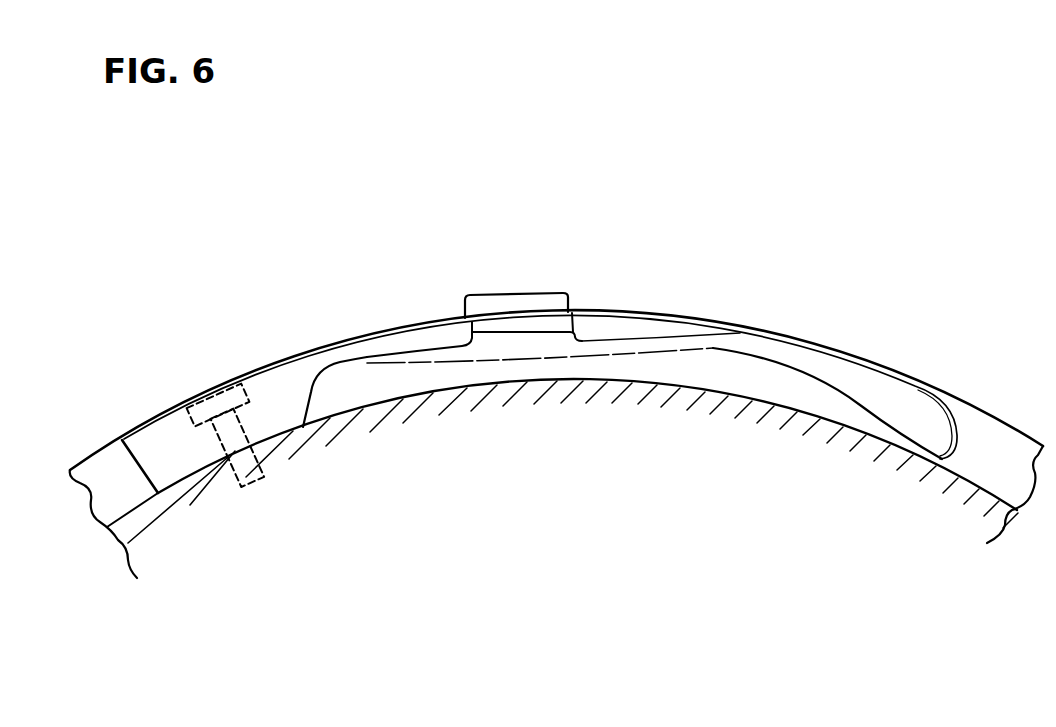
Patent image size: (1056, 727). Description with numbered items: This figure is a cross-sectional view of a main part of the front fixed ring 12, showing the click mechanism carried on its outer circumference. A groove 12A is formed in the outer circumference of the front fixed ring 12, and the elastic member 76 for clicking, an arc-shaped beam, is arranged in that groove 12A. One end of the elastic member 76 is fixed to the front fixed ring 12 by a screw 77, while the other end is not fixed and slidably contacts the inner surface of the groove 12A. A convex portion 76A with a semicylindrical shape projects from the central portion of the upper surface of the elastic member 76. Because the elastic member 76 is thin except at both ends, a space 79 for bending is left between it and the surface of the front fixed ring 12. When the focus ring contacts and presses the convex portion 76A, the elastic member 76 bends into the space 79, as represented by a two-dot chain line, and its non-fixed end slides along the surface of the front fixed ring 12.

The front fixed ring 12 is at (979, 406).
The groove 12A is at (115, 472).
The elastic member for clicking 76 is at (440, 338).
The convex portion 76A is at (530, 292).
The screw 77 is at (213, 405).
The space for bending 79 is at (705, 372).